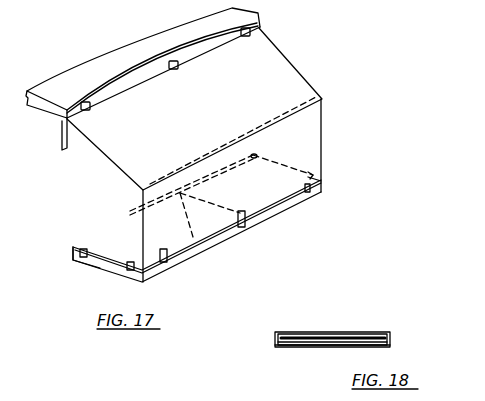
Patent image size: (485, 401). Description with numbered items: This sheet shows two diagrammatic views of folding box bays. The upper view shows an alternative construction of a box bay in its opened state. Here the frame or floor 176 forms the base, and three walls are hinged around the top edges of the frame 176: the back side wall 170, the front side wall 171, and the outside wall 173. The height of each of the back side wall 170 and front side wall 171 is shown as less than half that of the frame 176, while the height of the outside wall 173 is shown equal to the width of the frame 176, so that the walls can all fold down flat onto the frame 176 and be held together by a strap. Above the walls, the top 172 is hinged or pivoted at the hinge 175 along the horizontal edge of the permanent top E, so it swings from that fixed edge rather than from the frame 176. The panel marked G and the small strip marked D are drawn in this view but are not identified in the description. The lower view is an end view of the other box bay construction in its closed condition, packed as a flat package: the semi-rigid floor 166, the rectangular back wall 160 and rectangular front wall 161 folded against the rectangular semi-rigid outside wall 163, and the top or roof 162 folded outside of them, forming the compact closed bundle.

In FIG. 17, the permanent top E is at (143, 63).
In FIG. 17, the roof panel G is at (303, 68).
In FIG. 17, the strip D is at (61, 138).
In FIG. 17, the back side wall 170 is at (117, 242).
In FIG. 17, the front side wall 171 is at (260, 185).
In FIG. 17, the top 172 is at (178, 199).
In FIG. 17, the outside wall 173 is at (309, 137).
In FIG. 17, the hinge or pivot 175 is at (243, 40).
In FIG. 17, the frame or floor 176 is at (103, 262).
In FIG. 18, the rectangular back wall 160 is at (375, 336).
In FIG. 18, the rectangular front wall 161 is at (385, 335).
In FIG. 18, the top or roof 162 is at (289, 336).
In FIG. 18, the rectangular semi-rigid outside wall 163 is at (328, 332).
In FIG. 18, the semi-rigid floor 166 is at (285, 345).